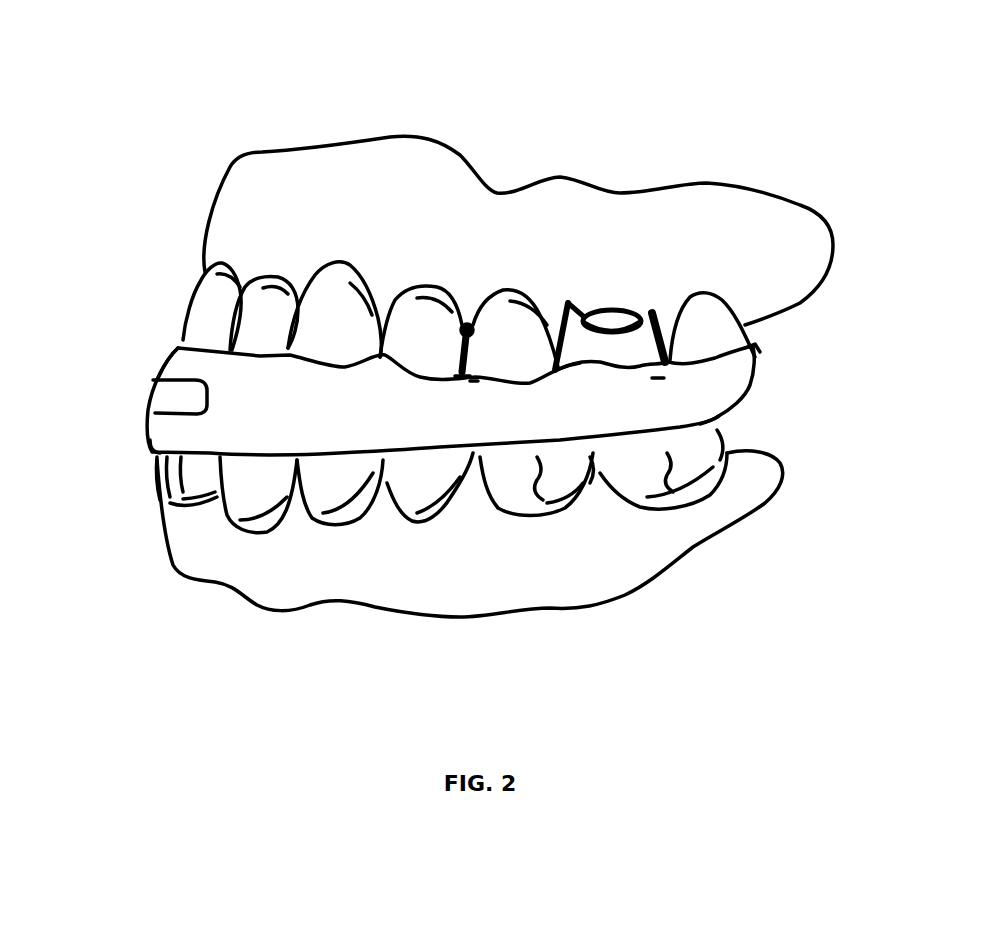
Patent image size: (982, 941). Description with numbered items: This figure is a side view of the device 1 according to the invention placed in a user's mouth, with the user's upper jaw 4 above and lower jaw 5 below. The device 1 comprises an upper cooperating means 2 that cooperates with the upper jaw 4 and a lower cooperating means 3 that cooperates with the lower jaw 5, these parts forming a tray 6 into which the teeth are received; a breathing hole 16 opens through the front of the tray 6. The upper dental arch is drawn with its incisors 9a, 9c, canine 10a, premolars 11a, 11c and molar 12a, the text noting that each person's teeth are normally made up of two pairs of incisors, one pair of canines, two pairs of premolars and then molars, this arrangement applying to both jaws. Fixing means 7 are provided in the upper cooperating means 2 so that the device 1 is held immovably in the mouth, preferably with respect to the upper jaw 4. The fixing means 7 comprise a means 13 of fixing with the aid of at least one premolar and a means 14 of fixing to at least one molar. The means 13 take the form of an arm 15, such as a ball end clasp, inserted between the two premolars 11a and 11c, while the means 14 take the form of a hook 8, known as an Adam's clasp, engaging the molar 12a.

The device 1 is at (747, 390).
The upper cooperating means 2 is at (753, 353).
The lower cooperating means 3 is at (720, 420).
The upper jaw 4 is at (340, 160).
The lower jaw 5 is at (208, 555).
The tray 6 is at (178, 347).
The fixing means 7 is at (473, 386).
The hook 8 is at (640, 313).
The incisor 9a is at (212, 292).
The incisor 9c is at (267, 293).
The canine 10a is at (330, 282).
The premolar 11a is at (430, 307).
The premolar 11c is at (510, 310).
The molar 12a is at (613, 317).
The means of fixation with the aid of at least one premolar 13 is at (460, 378).
The means of fixation to at least one molar 14 is at (662, 376).
The arm 15 is at (470, 320).
The breathing hole 16 is at (167, 397).